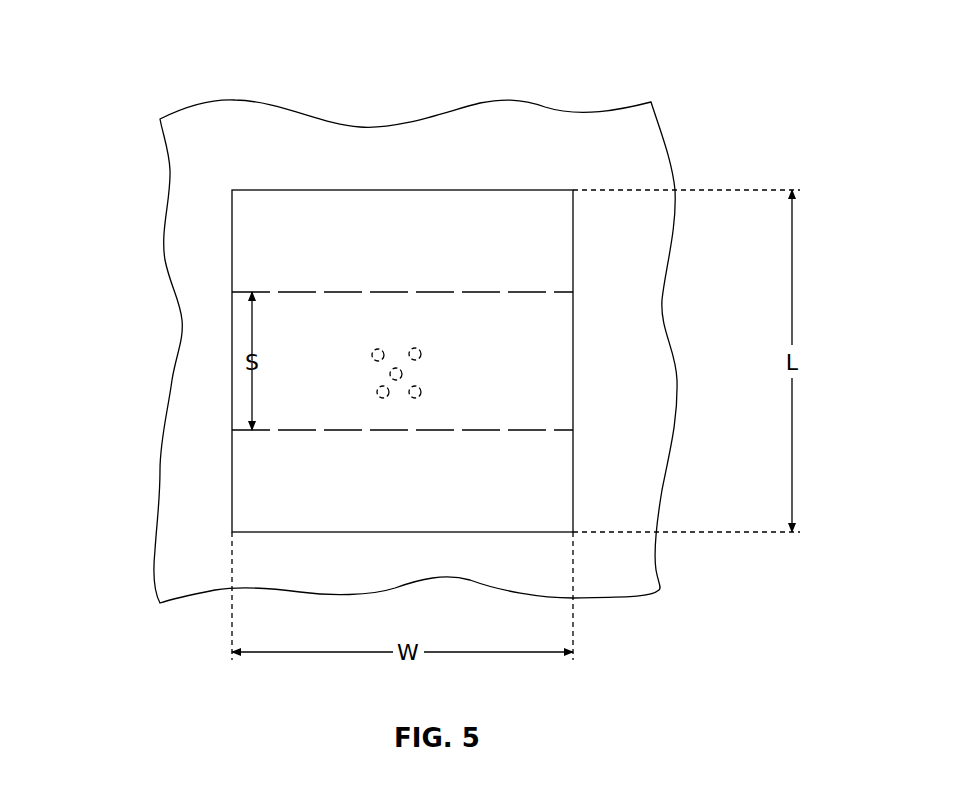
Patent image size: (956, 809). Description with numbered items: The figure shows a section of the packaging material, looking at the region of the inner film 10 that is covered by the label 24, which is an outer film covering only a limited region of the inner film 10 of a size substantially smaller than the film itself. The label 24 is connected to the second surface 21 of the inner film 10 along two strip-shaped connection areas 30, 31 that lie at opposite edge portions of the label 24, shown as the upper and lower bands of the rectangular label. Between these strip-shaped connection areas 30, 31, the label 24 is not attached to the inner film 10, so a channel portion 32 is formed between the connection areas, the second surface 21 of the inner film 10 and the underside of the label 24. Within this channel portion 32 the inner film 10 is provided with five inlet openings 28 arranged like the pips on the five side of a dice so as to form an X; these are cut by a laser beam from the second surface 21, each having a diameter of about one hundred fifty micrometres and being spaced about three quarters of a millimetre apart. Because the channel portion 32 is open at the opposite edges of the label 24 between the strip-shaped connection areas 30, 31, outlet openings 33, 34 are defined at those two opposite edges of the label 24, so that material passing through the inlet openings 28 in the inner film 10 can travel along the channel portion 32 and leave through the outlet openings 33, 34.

The inner film 10 is at (518, 100).
The second surface 21 is at (296, 152).
The label 24 is at (466, 183).
The inlet openings 28 is at (382, 398).
The strip-shaped connection area 30 is at (548, 270).
The strip-shaped connection area 31 is at (548, 488).
The channel portion 32 is at (548, 385).
The outlet opening 33 is at (232, 362).
The outlet opening 34 is at (573, 337).